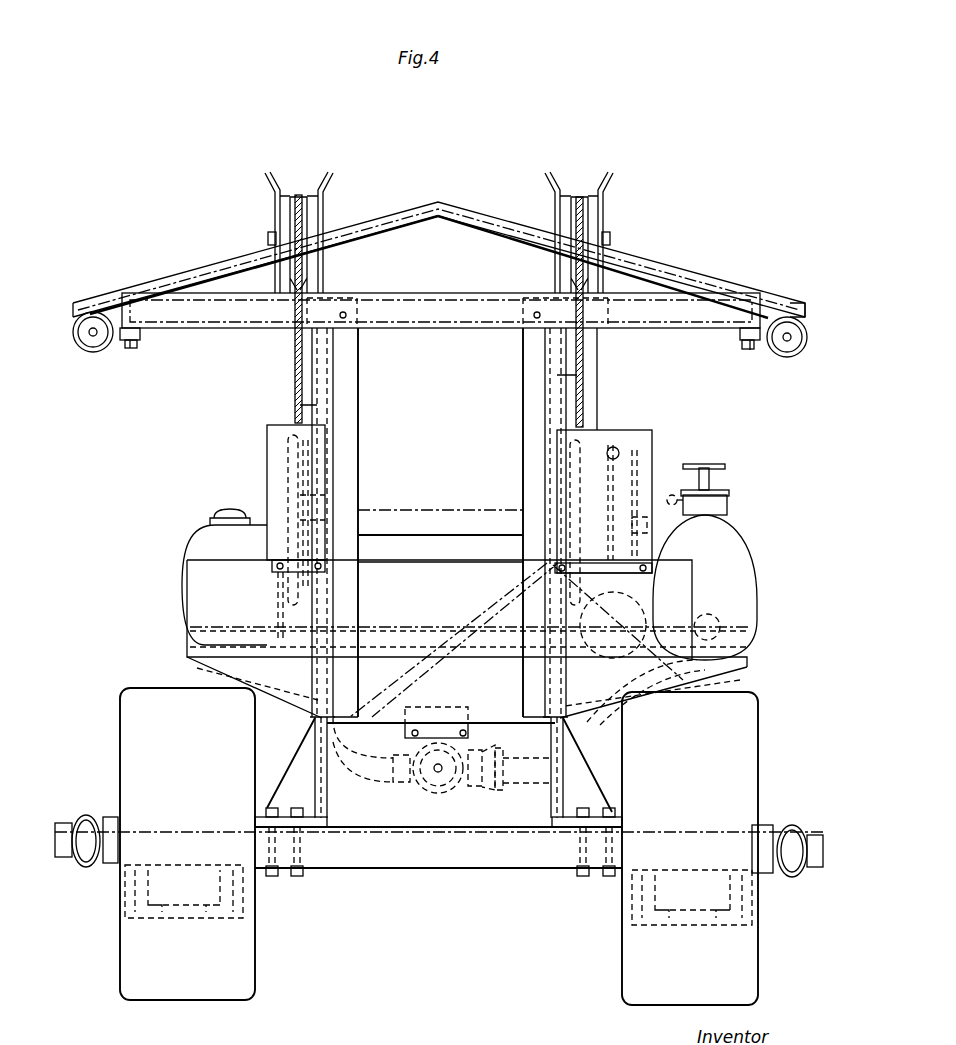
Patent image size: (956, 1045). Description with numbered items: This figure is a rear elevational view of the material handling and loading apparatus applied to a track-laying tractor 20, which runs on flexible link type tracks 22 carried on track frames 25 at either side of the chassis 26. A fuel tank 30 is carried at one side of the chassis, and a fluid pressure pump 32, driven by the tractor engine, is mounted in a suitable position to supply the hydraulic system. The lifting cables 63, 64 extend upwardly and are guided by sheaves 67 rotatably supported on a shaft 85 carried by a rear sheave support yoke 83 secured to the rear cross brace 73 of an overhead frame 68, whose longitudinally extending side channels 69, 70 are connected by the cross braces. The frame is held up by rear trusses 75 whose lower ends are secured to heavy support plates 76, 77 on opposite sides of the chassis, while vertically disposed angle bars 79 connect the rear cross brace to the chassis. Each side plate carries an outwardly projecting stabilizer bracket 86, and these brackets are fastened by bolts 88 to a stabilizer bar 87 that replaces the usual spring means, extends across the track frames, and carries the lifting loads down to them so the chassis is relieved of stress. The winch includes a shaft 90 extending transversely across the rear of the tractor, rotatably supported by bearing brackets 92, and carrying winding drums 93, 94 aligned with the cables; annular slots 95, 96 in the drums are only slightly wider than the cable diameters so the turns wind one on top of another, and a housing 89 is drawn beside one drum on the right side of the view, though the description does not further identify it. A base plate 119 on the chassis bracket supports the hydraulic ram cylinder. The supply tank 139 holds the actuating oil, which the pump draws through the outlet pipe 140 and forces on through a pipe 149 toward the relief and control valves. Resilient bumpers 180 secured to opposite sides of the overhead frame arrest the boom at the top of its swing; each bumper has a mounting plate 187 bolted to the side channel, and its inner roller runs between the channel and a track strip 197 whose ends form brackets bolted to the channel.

The tractor 20 is at (762, 713).
The tracks 22 is at (128, 954).
The track frames 25 is at (195, 913).
The chassis 26 is at (388, 712).
The fuel tank 30 is at (195, 537).
The fluid pressure pump 32 is at (444, 792).
The cable 63 is at (584, 369).
The cable 64 is at (294, 358).
The sheave 67 is at (298, 196).
The overhead frame 68 is at (500, 296).
The side channel 69 is at (125, 311).
The side channel 70 is at (766, 313).
The rear cross brace 73 is at (443, 297).
The rear trusses 75 is at (300, 406).
The support plate 76 is at (550, 777).
The support plate 77 is at (328, 779).
The angle bars 79 is at (356, 491).
The rear sheave support yoke 83 is at (328, 177).
The shaft 85 is at (268, 240).
The stabilizer bracket 86 is at (300, 762).
The stabilizer bar 87 is at (370, 862).
The bolts 88 is at (297, 878).
The housing 89 is at (657, 460).
The shaft 90 is at (423, 519).
The bearing brackets 92 is at (358, 548).
The winding drum 93 is at (603, 440).
The winding drum 94 is at (288, 452).
The annular slot 95 is at (575, 459).
The annular slot 96 is at (297, 490).
The base plate 119 is at (747, 660).
The supply tank 139 is at (757, 559).
The outlet pipe 140 is at (646, 703).
The pipe 149 is at (470, 617).
The resilient bumpers 180 is at (90, 352).
The mounting plate 187 is at (128, 343).
The track strip 197 is at (137, 344).